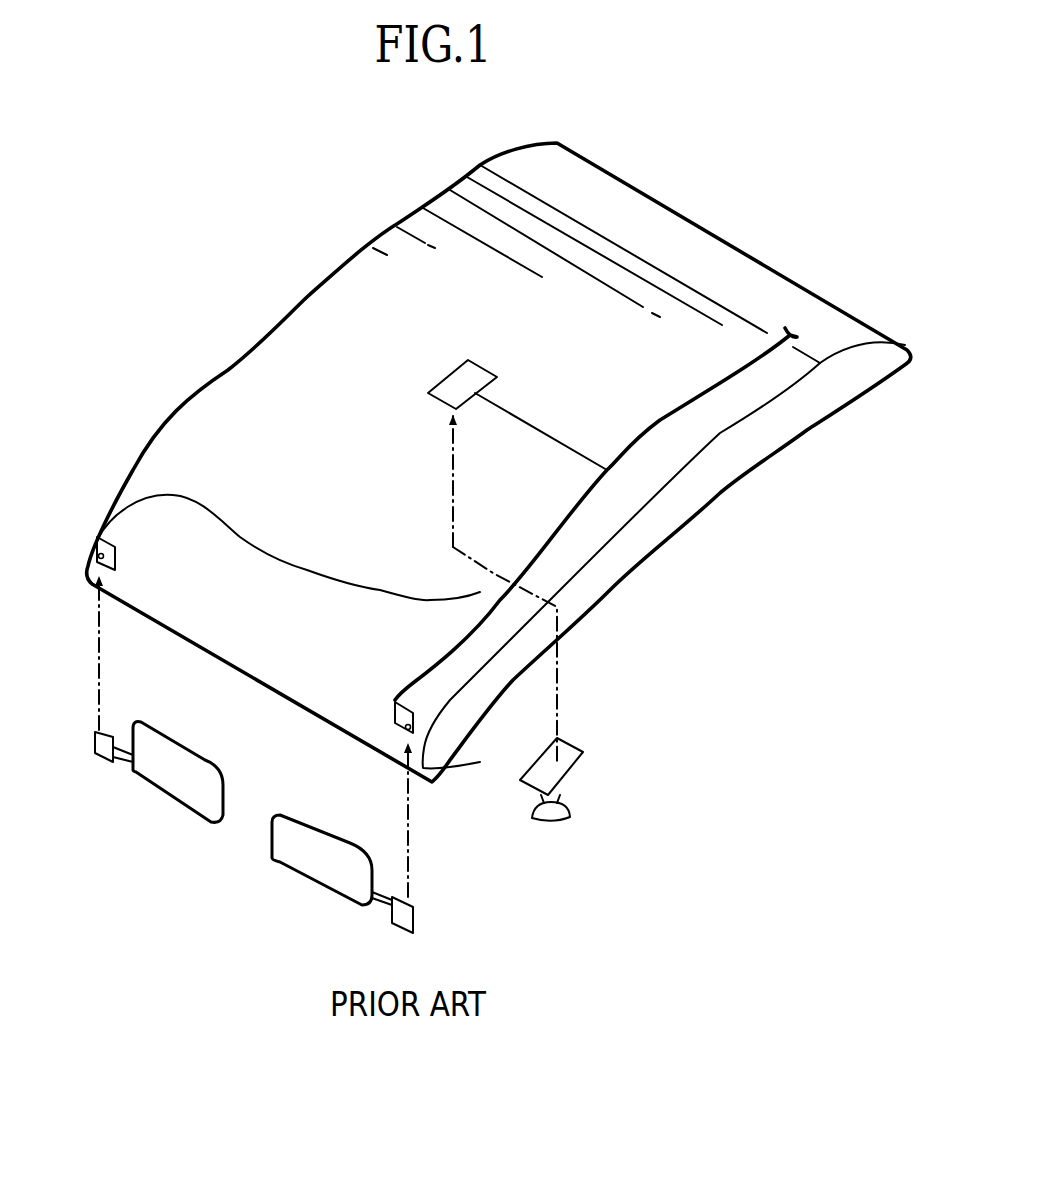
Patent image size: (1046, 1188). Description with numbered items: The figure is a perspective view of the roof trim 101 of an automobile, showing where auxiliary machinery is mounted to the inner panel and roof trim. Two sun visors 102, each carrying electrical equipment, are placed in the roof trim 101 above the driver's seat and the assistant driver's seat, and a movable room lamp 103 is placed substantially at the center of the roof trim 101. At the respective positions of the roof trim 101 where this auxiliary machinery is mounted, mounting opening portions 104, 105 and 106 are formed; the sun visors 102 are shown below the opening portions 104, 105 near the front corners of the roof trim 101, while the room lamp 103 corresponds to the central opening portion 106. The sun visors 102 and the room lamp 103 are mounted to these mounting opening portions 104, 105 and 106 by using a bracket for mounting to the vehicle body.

The roof trim 101 is at (314, 310).
The sun visor 102 is at (163, 799).
The movable room lamp 103 is at (589, 743).
The mounting opening portion 104 is at (96, 557).
The mounting opening portion 105 is at (411, 729).
The mounting opening portion 106 is at (464, 377).